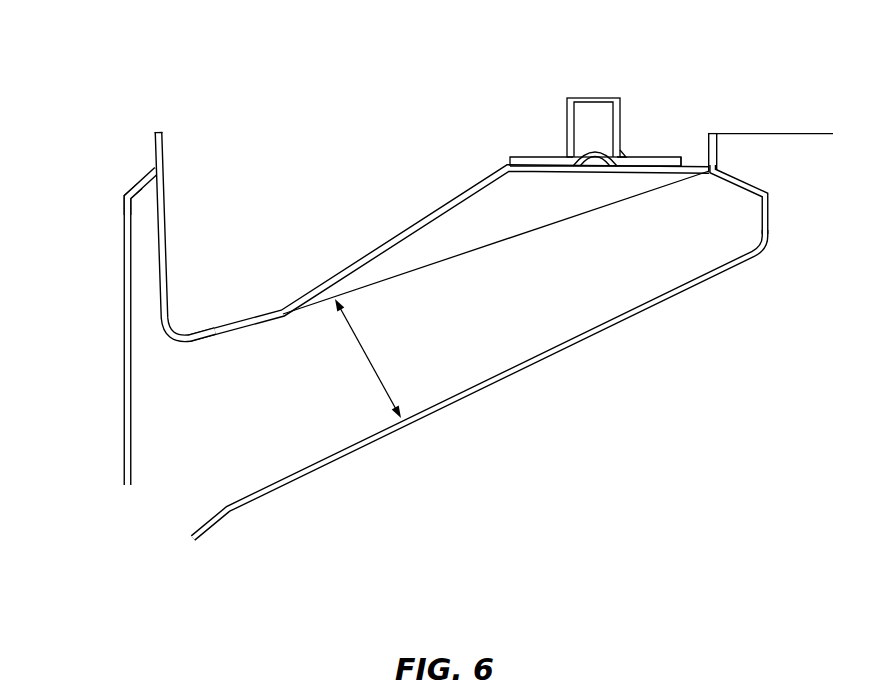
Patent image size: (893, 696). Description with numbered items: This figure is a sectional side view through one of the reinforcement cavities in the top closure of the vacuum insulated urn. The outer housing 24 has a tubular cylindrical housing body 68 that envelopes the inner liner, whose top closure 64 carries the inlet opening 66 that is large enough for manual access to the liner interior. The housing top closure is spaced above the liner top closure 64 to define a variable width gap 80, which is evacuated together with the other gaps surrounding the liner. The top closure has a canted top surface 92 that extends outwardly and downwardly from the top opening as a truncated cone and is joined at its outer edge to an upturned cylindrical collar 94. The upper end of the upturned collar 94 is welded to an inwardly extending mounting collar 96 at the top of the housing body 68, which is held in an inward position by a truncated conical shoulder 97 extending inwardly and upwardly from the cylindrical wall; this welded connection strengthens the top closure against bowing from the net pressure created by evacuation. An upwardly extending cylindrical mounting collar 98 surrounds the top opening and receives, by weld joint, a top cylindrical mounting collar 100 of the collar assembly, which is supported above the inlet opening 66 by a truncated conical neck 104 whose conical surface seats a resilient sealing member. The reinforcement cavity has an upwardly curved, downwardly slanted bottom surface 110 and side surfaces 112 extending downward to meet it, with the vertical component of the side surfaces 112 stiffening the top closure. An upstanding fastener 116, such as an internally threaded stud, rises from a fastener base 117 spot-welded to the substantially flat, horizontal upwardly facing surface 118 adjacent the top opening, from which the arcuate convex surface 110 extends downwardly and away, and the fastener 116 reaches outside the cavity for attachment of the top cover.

The outer housing 24 is at (88, 318).
The top closure of the inner liner 64 is at (502, 309).
The inlet opening 66 is at (528, 309).
The housing body 68 is at (98, 318).
The variable width gap 80 is at (370, 362).
The canted top surface 92 is at (390, 222).
The upturned cylindrical collar 94 is at (162, 222).
The inwardly extending mounting collar 96 is at (153, 142).
The truncated conical shoulder 97 is at (133, 190).
The upwardly extending cylindrical mounting collar 98 is at (709, 133).
The top cylindrical mounting collar 100 is at (733, 160).
The truncated conical neck 104 is at (716, 199).
The bottom surface of the reinforcement cavity 110 is at (488, 245).
The side surface of the reinforcement cavity 112 is at (611, 100).
The upstanding fastener 116 is at (566, 142).
The fastener base 117 is at (632, 157).
The upwardly facing surface 118 is at (703, 168).